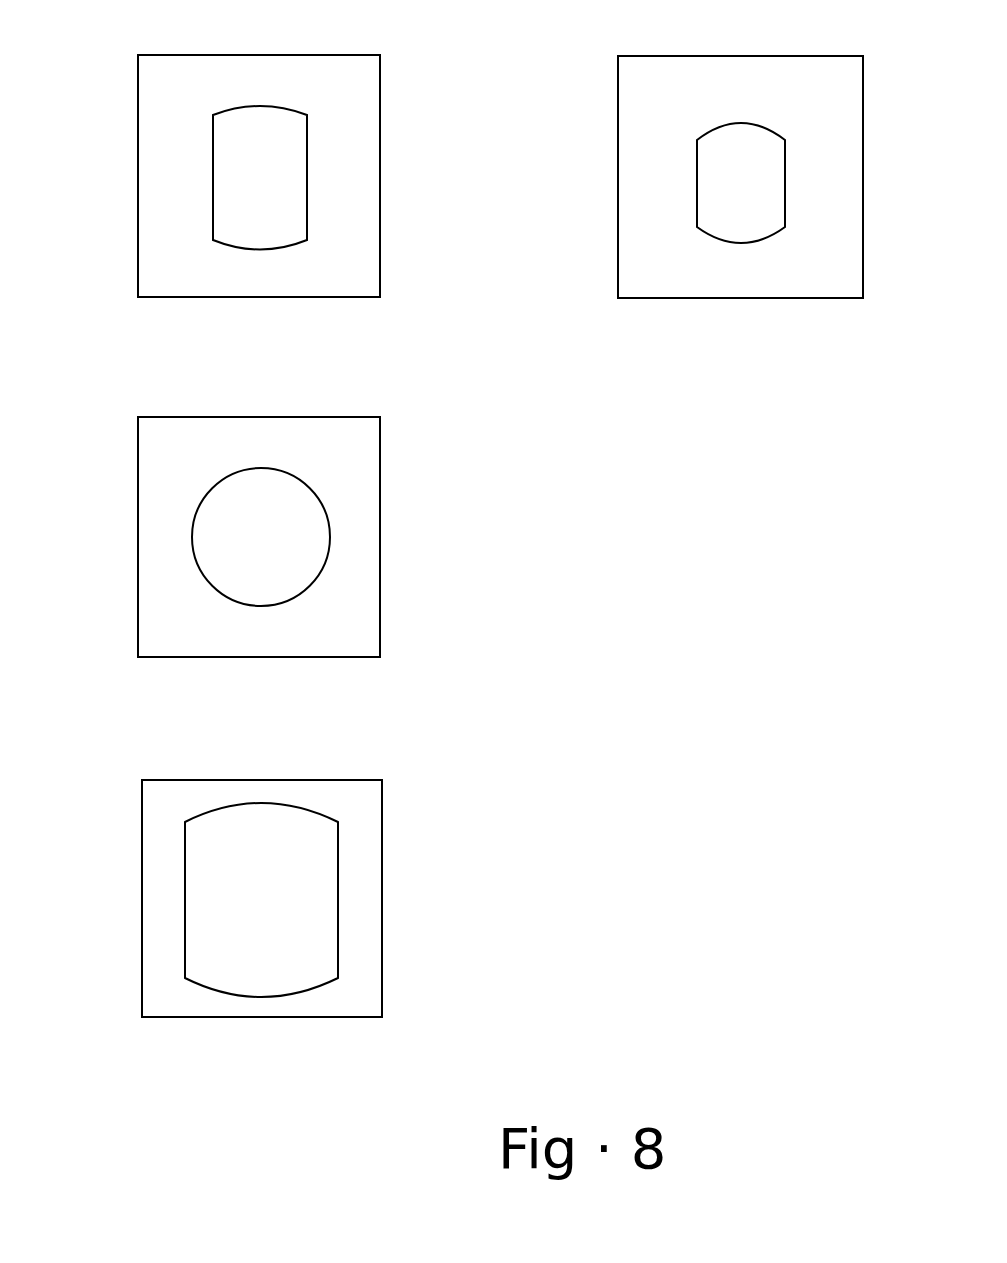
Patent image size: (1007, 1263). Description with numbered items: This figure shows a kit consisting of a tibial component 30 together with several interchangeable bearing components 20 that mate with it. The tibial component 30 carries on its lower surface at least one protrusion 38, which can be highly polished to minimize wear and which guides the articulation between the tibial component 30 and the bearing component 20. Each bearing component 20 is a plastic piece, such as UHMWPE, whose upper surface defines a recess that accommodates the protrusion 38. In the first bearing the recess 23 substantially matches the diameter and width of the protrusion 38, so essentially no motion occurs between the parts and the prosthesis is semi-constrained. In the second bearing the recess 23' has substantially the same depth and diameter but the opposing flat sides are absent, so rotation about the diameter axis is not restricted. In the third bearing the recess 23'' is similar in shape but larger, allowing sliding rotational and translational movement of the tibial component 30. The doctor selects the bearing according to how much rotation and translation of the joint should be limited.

The bearing component 20 is at (127, 53).
The recess 23 is at (346, 178).
The recess 23' is at (329, 537).
The recess 23'' is at (329, 900).
The tibial component 30 is at (873, 55).
The protrusion 38 is at (737, 183).